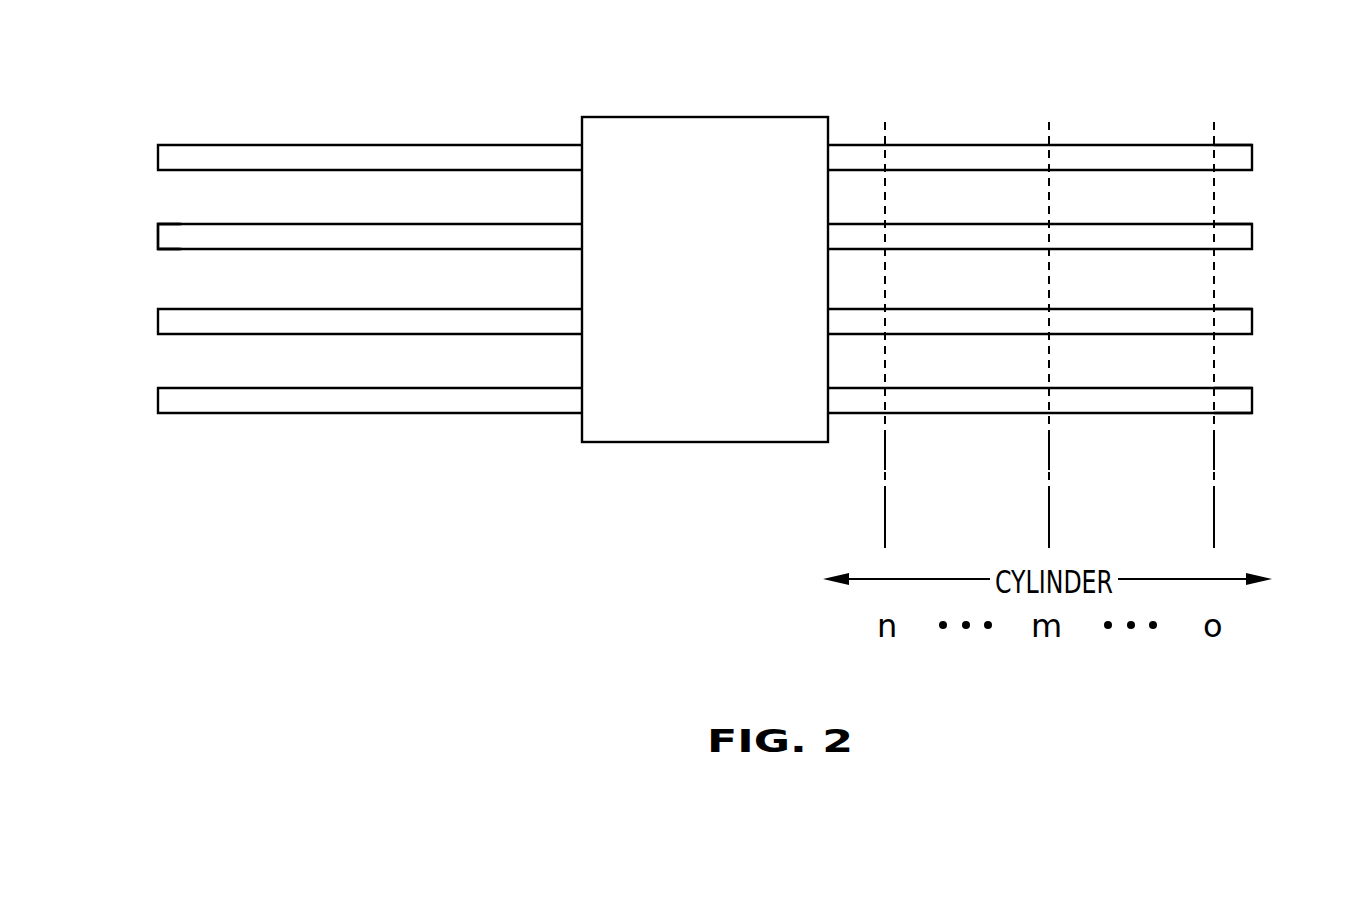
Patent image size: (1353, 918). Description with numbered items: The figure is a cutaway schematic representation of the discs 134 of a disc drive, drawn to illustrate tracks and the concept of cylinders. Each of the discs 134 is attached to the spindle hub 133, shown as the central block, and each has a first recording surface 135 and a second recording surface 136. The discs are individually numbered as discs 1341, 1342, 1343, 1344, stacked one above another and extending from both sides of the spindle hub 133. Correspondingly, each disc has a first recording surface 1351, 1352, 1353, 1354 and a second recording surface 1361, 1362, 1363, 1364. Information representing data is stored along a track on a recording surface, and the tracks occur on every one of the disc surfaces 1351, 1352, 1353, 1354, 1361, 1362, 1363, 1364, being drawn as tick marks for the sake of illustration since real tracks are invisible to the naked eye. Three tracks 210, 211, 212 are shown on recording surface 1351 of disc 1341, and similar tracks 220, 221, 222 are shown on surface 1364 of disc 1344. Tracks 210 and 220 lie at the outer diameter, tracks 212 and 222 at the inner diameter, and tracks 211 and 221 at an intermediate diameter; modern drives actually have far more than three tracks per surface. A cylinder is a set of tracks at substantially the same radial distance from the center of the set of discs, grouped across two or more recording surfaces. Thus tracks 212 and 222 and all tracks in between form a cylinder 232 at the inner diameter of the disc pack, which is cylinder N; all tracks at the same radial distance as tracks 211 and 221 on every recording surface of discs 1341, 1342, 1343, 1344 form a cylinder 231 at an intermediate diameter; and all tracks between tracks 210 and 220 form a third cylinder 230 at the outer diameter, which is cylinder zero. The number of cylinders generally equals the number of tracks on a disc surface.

The spindle hub 133 is at (718, 117).
The discs 134 is at (158, 237).
The first recording surface 135 is at (177, 223).
The second recording surface 136 is at (177, 250).
The second recording surface 1361 is at (227, 170).
The second recording surface 1362 is at (227, 249).
The second recording surface 1363 is at (227, 334).
The second recording surface 1364 is at (1236, 413).
The disc 1341 is at (1252, 157).
The disc 1342 is at (1252, 236).
The disc 1343 is at (1252, 321).
The disc 1344 is at (1252, 400).
The first recording surface 1351 is at (1237, 145).
The first recording surface 1352 is at (1237, 224).
The first recording surface 1353 is at (1237, 309).
The first recording surface 1354 is at (1237, 388).
The track 210 is at (1235, 105).
The track 211 is at (1049, 117).
The track 212 is at (906, 105).
The track 220 is at (1214, 440).
The track 221 is at (1049, 440).
The track 222 is at (885, 440).
The cylinder 230 is at (1214, 508).
The cylinder 231 is at (1049, 508).
The cylinder 232 is at (885, 508).